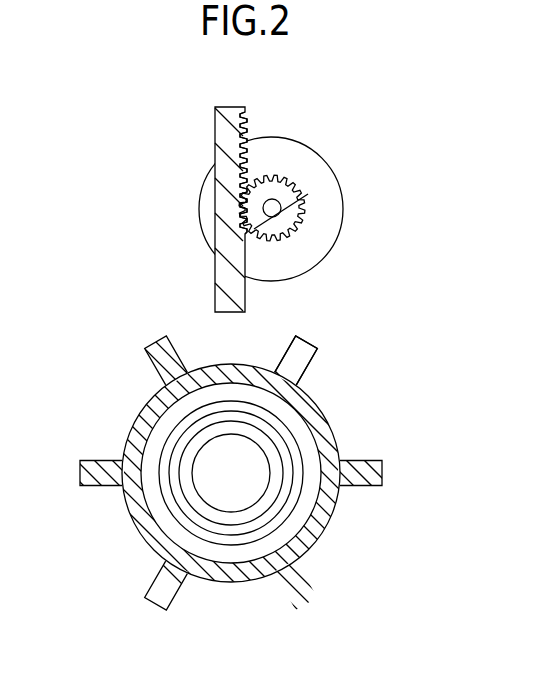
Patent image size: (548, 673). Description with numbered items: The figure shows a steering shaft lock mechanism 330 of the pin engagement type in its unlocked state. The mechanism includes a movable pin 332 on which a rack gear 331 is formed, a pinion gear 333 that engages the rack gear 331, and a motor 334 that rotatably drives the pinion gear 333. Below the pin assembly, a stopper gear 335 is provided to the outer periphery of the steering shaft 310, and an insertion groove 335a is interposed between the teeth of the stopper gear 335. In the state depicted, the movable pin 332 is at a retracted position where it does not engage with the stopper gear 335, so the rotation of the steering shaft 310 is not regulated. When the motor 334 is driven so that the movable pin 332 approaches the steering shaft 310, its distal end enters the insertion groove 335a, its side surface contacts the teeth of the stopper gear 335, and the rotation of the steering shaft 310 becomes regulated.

The steering shaft lock mechanism 330 is at (118, 207).
The rack gear 331 is at (245, 111).
The movable pin 332 is at (215, 273).
The pinion gear 333 is at (308, 194).
The motor 334 is at (327, 235).
The steering shaft 310 is at (302, 432).
The stopper gear 335 is at (373, 475).
The insertion groove 335a is at (258, 347).